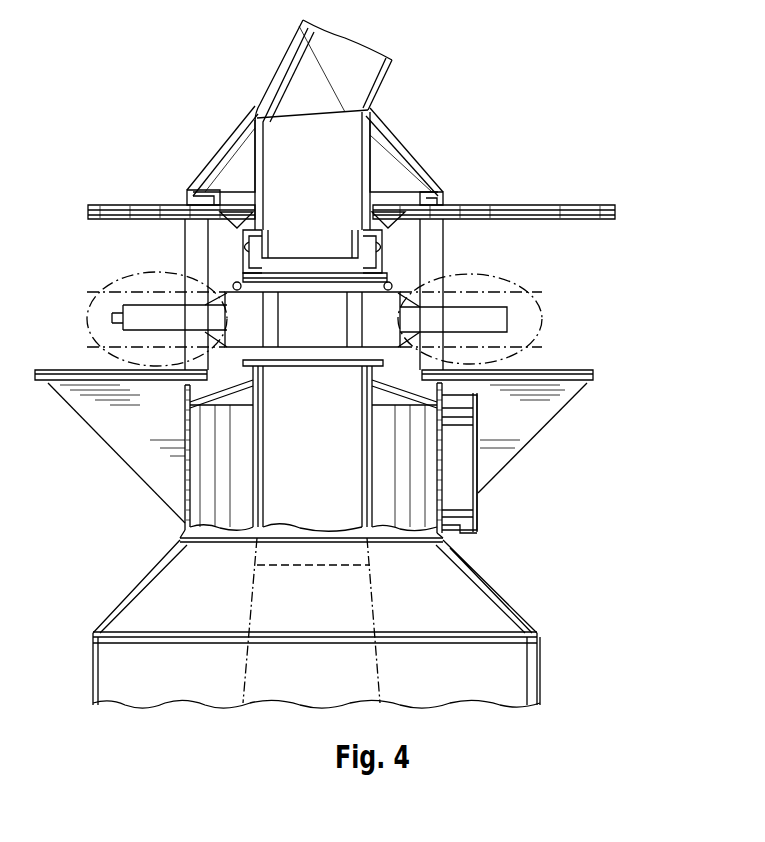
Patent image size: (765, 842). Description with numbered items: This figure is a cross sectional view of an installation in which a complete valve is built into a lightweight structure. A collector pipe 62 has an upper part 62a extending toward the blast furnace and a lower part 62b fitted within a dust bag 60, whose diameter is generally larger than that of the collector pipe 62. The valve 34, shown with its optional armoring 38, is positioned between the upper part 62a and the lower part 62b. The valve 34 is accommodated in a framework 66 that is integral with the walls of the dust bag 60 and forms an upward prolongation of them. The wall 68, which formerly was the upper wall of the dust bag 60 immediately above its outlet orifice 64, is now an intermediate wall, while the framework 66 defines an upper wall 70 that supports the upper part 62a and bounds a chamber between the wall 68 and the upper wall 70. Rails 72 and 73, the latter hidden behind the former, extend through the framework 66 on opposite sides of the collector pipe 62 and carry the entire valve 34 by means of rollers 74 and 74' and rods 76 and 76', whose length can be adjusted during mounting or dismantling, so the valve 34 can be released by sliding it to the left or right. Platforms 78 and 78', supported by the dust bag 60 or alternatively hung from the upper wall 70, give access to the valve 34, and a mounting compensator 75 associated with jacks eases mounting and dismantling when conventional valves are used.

The upper part of collector pipe 62a is at (366, 72).
The upper wall 70 is at (395, 142).
The framework 66 is at (406, 175).
The roller 74 is at (201, 191).
The roller 74' is at (425, 199).
The rail 72 is at (501, 212).
The rail 73 is at (543, 214).
The rod 76 is at (203, 251).
The rod 76' is at (422, 251).
The mounting compensator 75 is at (388, 256).
The armoring 38 is at (514, 281).
The valve 34 is at (318, 330).
The platform 78 is at (121, 427).
The platform 78' is at (507, 412).
The wall 68 is at (215, 405).
The collector pipe 62 is at (335, 447).
The lower part of collector pipe 62b is at (253, 493).
The outlet orifice 64 is at (467, 430).
The dust bag 60 is at (467, 583).